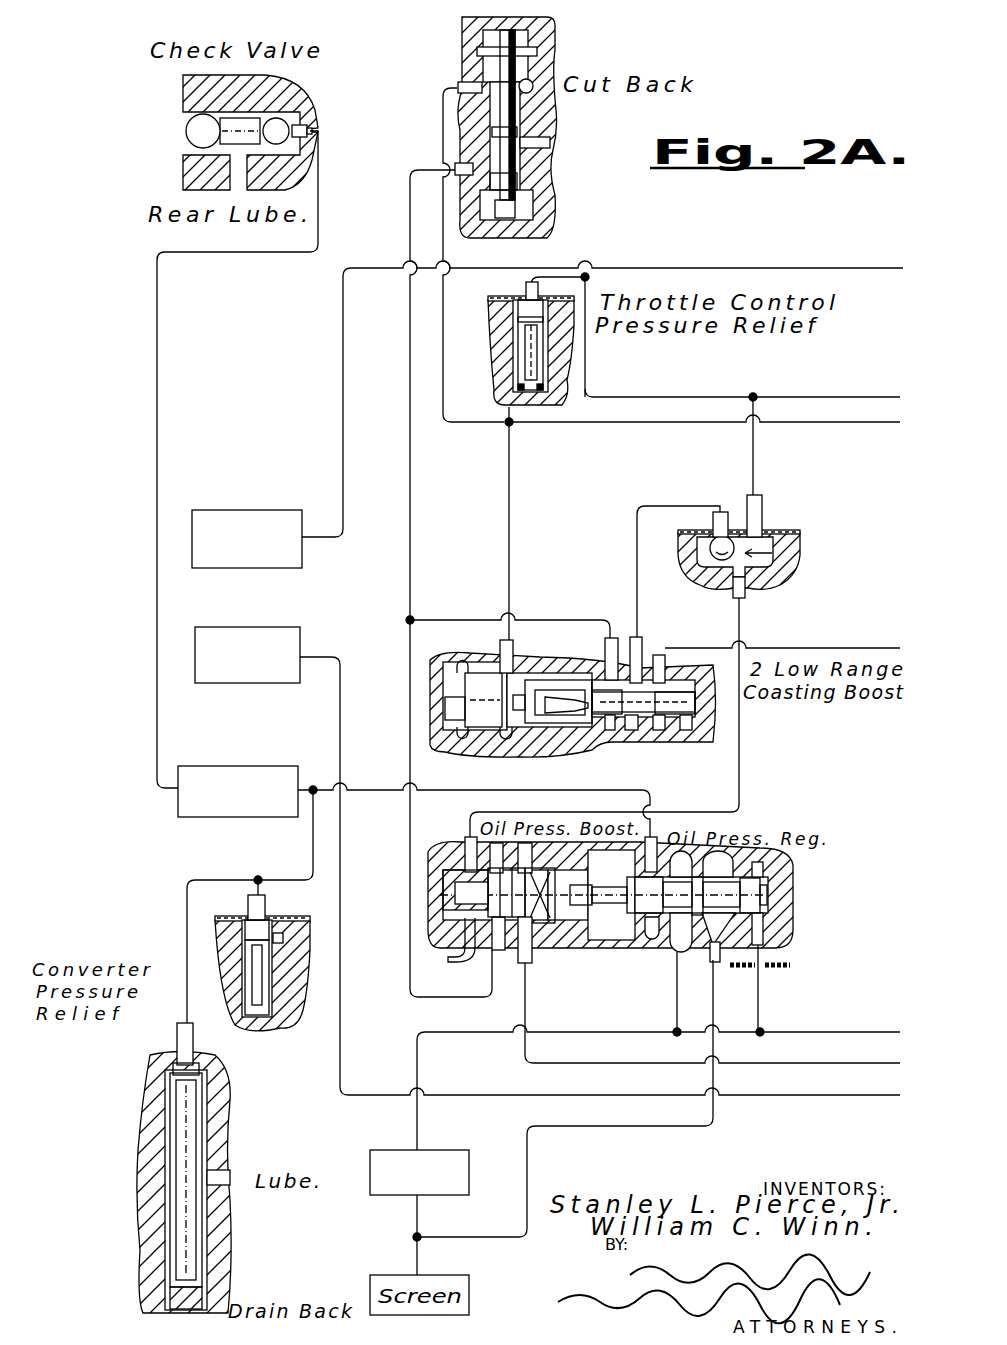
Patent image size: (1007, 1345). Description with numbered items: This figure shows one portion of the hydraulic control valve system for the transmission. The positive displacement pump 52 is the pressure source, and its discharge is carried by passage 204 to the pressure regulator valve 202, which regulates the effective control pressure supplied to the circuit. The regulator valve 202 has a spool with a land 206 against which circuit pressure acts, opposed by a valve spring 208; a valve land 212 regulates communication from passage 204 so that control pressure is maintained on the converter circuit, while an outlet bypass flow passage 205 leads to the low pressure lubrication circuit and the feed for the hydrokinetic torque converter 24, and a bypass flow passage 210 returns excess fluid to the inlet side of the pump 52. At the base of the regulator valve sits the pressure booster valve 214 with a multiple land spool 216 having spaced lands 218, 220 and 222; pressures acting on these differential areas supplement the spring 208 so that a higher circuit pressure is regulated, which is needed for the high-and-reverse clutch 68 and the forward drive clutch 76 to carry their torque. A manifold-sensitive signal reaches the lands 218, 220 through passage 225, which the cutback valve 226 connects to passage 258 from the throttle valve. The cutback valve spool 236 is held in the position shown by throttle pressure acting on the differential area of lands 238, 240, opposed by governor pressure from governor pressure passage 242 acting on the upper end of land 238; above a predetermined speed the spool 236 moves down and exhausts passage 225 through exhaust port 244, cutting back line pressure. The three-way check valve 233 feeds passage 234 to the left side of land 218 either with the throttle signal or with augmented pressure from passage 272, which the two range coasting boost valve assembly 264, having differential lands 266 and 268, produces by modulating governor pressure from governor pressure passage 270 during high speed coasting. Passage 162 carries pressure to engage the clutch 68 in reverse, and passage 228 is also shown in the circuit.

The passage 162 is at (890, 247).
The passage 258 is at (877, 377).
The governor pressure passage 270 is at (663, 424).
The passage 272 is at (690, 480).
The three-way check valve 233 is at (772, 553).
The passage 234 is at (665, 679).
The "2" range coasting boost valve assembly 264 is at (633, 690).
The valve land 266 is at (600, 742).
The valve land 268 is at (680, 697).
The outlet bypass flow passage 205 is at (650, 800).
The land 206 is at (625, 950).
The multiple land spool 216 is at (462, 873).
The land 218 is at (500, 893).
The land 220 is at (465, 922).
The pressure booster valve 214 is at (485, 947).
The land 222 is at (560, 953).
The valve spring 208 is at (588, 935).
The pressure regulator valve 202 is at (617, 945).
The valve land 212 is at (648, 957).
The passage 204 is at (676, 1008).
The bypass flow passage 210 is at (762, 993).
The high-and-reverse clutch 68 is at (290, 510).
The forward drive clutch 76 is at (302, 640).
The hydrokinetic torque converter 24 is at (268, 768).
The positive displacement pump 52 is at (462, 1148).
The passage 225 is at (410, 547).
The line 228 is at (590, 248).
The governor pressure passage 242 is at (443, 203).
The land 240 is at (477, 127).
The valve spool 236 is at (503, 153).
The land 238 is at (516, 127).
The cutback valve 226 is at (540, 128).
The exhaust port 244 is at (532, 195).